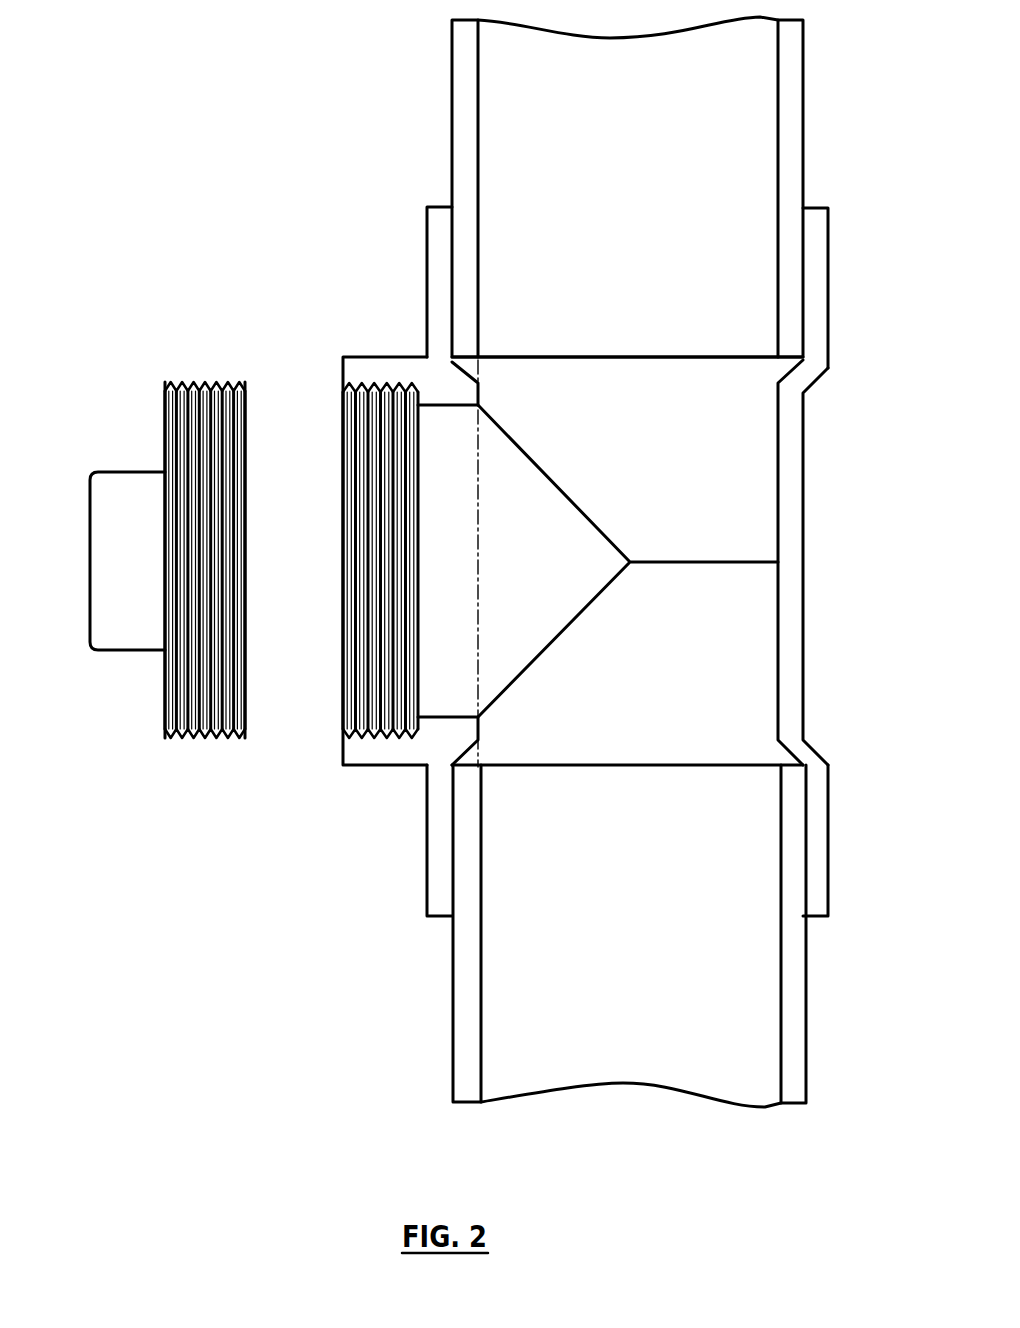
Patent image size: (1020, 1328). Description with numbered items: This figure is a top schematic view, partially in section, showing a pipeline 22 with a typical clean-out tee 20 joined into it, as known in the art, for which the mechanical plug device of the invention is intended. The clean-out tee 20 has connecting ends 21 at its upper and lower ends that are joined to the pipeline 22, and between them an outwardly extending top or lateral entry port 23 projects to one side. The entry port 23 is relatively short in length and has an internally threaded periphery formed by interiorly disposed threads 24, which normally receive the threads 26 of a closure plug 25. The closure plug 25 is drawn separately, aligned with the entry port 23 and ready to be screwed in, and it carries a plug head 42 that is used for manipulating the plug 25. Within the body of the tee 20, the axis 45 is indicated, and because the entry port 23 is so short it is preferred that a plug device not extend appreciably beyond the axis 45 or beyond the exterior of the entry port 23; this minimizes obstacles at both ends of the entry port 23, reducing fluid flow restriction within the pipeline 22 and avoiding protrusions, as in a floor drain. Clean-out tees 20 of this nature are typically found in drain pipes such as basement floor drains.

The clean-out tee 20 is at (811, 540).
The connecting ends 21 is at (433, 242).
The pipeline 22 is at (458, 95).
The entry port 23 is at (390, 367).
The interiorly disposed threads 24 is at (362, 422).
The closure plug 25 is at (165, 425).
The threads 26 is at (200, 382).
The plug head 42 is at (137, 640).
The axis 45 is at (480, 508).